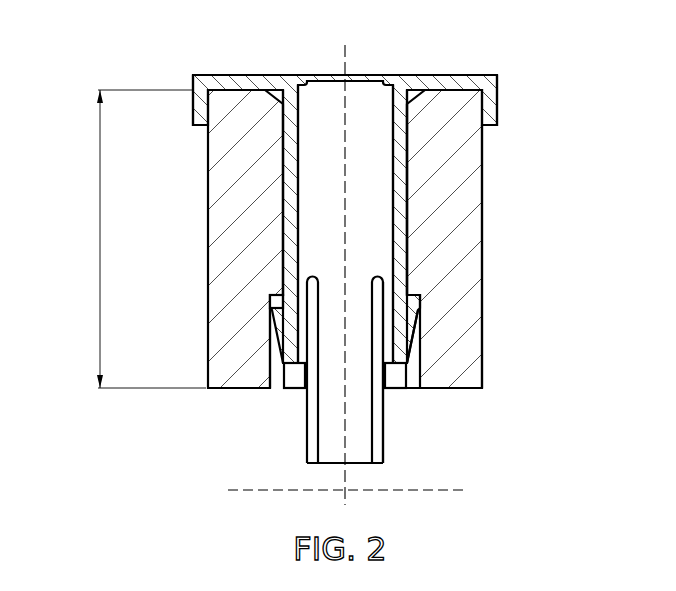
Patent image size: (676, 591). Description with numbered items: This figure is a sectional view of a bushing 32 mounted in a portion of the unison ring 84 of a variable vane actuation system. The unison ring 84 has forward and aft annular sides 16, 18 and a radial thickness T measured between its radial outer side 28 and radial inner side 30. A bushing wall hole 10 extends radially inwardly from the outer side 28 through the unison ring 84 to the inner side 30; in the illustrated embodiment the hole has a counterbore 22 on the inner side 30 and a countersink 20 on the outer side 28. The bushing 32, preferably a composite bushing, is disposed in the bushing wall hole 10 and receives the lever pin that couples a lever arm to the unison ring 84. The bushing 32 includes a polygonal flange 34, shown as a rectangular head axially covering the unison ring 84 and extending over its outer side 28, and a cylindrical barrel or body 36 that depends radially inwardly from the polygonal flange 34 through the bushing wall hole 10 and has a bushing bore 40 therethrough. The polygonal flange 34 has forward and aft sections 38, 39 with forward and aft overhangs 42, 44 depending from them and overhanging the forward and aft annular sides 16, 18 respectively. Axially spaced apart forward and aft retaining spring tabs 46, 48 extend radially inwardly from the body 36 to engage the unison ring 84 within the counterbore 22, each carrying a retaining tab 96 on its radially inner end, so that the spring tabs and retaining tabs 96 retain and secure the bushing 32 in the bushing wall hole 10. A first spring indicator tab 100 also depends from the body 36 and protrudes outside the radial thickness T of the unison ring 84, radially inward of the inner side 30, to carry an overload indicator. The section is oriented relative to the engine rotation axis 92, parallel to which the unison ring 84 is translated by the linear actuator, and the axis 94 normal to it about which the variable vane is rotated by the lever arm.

The bushing wall hole 10 is at (402, 389).
The forward annular side 16 is at (208, 207).
The aft annular side 18 is at (483, 198).
The countersink 20 is at (296, 83).
The counterbore 22 is at (278, 371).
The radial outer side 28 is at (438, 89).
The radial inner side 30 is at (233, 388).
The bushing 32 is at (407, 192).
The polygonal flange 34 is at (230, 74).
The cylindrical barrel or body 36 is at (299, 176).
The forward section 38 is at (257, 74).
The aft section 39 is at (463, 74).
The bushing bore 40 is at (336, 238).
The forward overhang 42 is at (192, 107).
The aft overhang 44 is at (498, 105).
The forward retaining spring tab 46 is at (271, 302).
The aft retaining spring tab 48 is at (408, 352).
The unison ring 84 is at (483, 323).
The engine rotation axis 92 is at (448, 491).
The axis 94 is at (345, 473).
The retaining tab 96 is at (287, 388).
The first spring indicator tab 100 is at (385, 453).
The radial thickness T is at (100, 222).